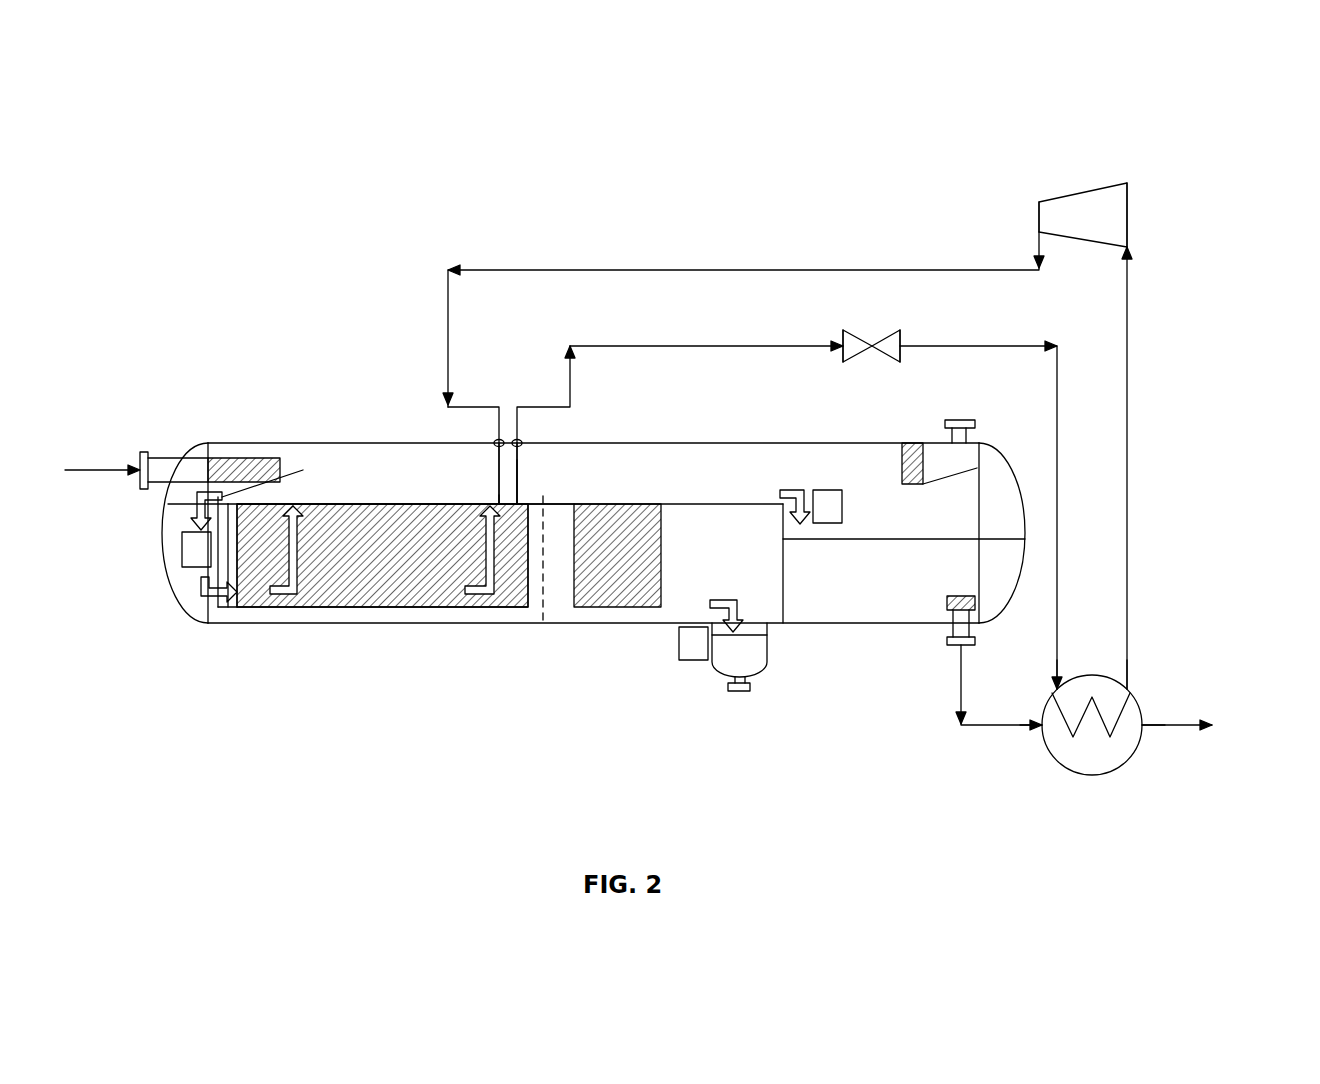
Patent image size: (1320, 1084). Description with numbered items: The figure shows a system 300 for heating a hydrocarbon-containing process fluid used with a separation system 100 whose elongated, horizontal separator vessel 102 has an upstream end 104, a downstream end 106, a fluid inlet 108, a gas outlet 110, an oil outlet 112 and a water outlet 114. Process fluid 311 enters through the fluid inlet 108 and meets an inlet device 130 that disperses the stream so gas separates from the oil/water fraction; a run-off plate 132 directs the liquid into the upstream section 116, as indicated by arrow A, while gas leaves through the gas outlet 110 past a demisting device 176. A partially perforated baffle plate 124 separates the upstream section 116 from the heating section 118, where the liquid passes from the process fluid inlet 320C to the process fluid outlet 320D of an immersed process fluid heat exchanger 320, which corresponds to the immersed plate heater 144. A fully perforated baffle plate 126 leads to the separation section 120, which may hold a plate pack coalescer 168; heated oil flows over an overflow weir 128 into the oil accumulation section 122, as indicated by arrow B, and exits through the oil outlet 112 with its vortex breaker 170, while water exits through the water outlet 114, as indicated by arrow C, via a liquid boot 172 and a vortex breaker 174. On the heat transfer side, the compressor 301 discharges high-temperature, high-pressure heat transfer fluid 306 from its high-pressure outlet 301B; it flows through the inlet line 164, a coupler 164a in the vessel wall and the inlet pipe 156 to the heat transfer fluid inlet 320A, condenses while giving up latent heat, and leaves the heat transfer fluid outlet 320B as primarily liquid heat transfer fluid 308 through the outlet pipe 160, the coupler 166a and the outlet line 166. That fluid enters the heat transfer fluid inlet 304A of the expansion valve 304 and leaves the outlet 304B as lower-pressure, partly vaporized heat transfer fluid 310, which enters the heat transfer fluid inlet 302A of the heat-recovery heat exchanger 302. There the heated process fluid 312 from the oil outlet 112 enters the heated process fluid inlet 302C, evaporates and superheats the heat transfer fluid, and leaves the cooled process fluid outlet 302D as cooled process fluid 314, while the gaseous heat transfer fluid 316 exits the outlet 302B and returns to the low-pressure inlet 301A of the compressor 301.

The system 300 is at (776, 133).
The compressor 301 is at (1088, 205).
The low-pressure heat transfer fluid inlet 301A is at (1128, 240).
The high-pressure heat transfer fluid outlet 301B is at (1039, 215).
The heat transfer fluid 306 is at (693, 233).
The inlet line 164 is at (447, 400).
The coupler 164a is at (494, 448).
The heat transfer fluid inlet 320A is at (495, 441).
The heat transfer fluid outlet 320B is at (521, 441).
The outlet line 166 is at (547, 403).
The coupler 166a is at (521, 448).
The heat transfer fluid 308 is at (705, 346).
The expansion valve 304 is at (880, 338).
The heat transfer fluid inlet 304A is at (843, 360).
The heat transfer fluid outlet 304B is at (900, 360).
The heat transfer fluid 310 is at (1003, 346).
The heat transfer fluid 316 is at (1127, 382).
The separation system 100 is at (296, 366).
The separator vessel 102 is at (733, 443).
The upstream end 104 is at (192, 620).
The downstream end 106 is at (1026, 582).
The hydrocarbon-containing process fluid 311 is at (92, 466).
The fluid inlet 108 is at (150, 452).
The inlet device 130 is at (262, 458).
The run-off plate 132 is at (303, 470).
The upstream section 116 is at (187, 590).
The process fluid inlet 320C is at (232, 610).
The partially perforated baffle plate 124 is at (202, 583).
The process fluid heat exchanger 320 is at (372, 595).
The immersed plate heater 144 is at (382, 555).
The heating section 118 is at (447, 617).
The inlet pipe 156 is at (492, 503).
The outlet pipe 160 is at (519, 468).
The fully perforated baffle plate 126 is at (540, 628).
The separation section 120 is at (557, 598).
The process fluid outlet 320D is at (545, 523).
The plate pack coalescer 168 is at (662, 518).
The overflow weir 128 is at (780, 595).
The oil accumulation section 122 is at (905, 610).
The demisting device 176 is at (903, 458).
The gas outlet 110 is at (966, 420).
The vortex breaker 170 is at (962, 594).
The oil outlet 112 is at (955, 647).
The vortex breaker 174 is at (768, 630).
The liquid boot 172 is at (768, 660).
The water outlet 114 is at (738, 692).
The heated hydrocarbon-containing process fluid 312 is at (958, 712).
The heat-recovery heat exchanger 302 is at (1142, 722).
The heat transfer fluid inlet 302A is at (1055, 686).
The heat transfer fluid outlet 302B is at (1130, 688).
The heated process fluid inlet 302C is at (1042, 728).
The cooled process fluid outlet 302D is at (1145, 730).
The cooled hydrocarbon-containing process fluid 314 is at (1180, 730).